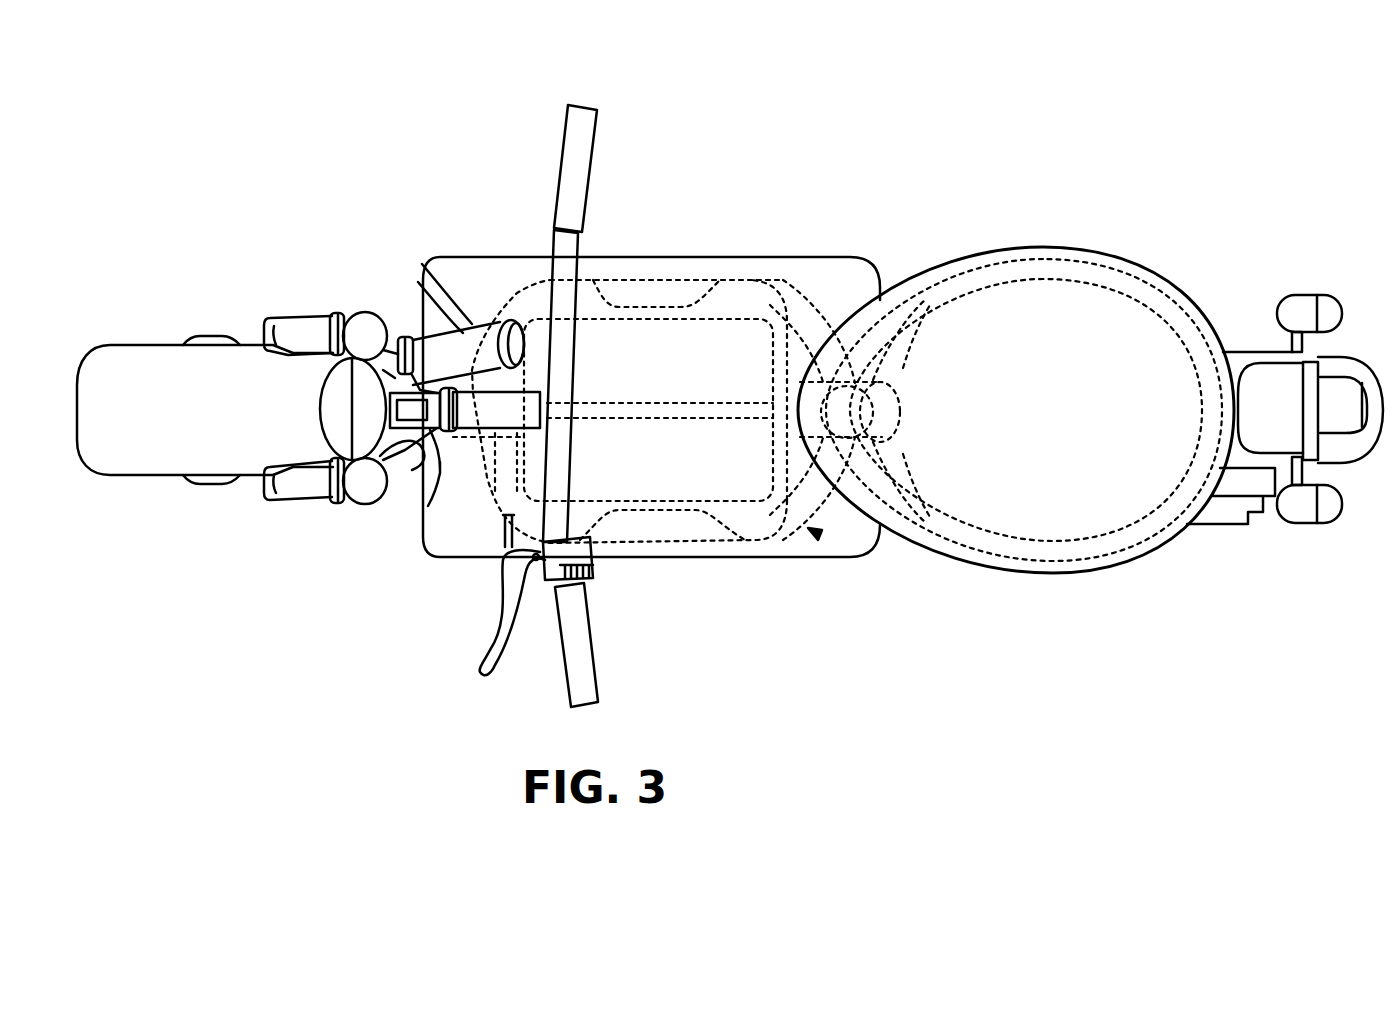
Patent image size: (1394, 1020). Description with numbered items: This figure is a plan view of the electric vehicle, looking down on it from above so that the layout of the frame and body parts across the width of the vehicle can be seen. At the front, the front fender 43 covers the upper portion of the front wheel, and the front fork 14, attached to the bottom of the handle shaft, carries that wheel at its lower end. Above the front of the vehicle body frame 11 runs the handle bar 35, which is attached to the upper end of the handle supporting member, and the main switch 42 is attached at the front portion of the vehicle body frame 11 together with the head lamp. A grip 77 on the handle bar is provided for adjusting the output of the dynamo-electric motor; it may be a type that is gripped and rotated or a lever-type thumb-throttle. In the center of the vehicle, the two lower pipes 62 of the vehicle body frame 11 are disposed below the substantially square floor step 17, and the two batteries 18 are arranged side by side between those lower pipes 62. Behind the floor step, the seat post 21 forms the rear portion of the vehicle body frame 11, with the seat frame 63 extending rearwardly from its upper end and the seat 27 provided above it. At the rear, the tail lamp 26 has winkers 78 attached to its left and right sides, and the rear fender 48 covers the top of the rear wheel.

The vehicle body frame 11 is at (818, 540).
The front fork 14 is at (330, 498).
The floor step 17 is at (750, 257).
The batteries 18 is at (728, 648).
The seat post 21 is at (903, 410).
The tail lamp 26 is at (1333, 403).
The seat 27 is at (1043, 247).
The handle bar 35 is at (545, 232).
The main switch 42 is at (478, 330).
The front fender 43 is at (153, 343).
The rear fender 48 is at (1347, 463).
The lower pipes 62 is at (650, 647).
The seat frame 63 is at (1055, 578).
The grip 77 is at (553, 149).
The winkers 78 is at (1297, 523).